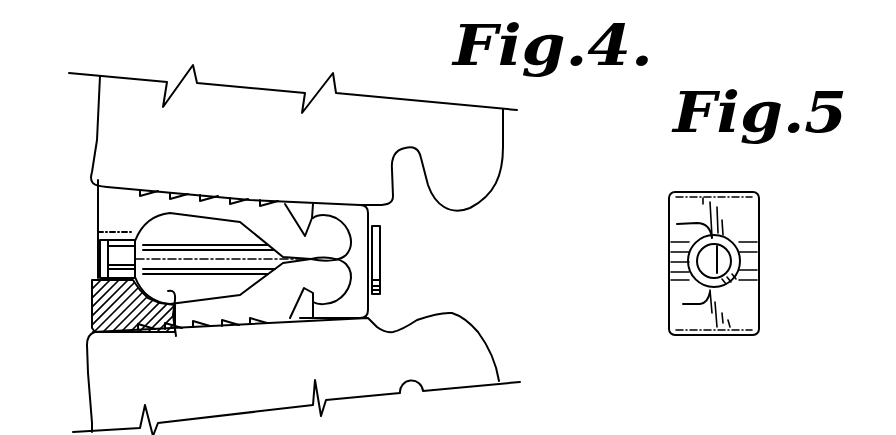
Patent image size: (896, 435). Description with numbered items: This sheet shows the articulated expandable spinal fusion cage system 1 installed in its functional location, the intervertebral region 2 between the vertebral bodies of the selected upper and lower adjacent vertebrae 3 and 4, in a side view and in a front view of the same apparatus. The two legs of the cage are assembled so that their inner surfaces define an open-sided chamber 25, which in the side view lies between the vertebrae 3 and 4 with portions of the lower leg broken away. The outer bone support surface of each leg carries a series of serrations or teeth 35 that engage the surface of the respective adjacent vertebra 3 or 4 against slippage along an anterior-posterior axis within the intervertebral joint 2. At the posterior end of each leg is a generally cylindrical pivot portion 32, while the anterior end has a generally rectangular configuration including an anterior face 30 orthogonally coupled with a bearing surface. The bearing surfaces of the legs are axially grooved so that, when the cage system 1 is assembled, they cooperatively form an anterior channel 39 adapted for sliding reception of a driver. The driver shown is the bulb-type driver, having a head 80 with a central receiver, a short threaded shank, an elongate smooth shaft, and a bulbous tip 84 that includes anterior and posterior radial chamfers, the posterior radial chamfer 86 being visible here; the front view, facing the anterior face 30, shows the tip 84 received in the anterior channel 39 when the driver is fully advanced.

In FIG. 4, the articulated expandable spinal fusion cage system 1 is at (50, 221).
In FIG. 4, the intervertebral region 2 is at (458, 251).
In FIG. 4, the upper adjacent vertebra 3 is at (110, 139).
In FIG. 4, the lower adjacent vertebra 4 is at (100, 381).
In FIG. 4, the open-sided chamber 25 is at (191, 236).
In FIG. 4, the pivot portion 32 is at (340, 243).
In FIG. 4, the serrations or teeth 35 is at (255, 200).
In FIG. 4, the head 80 is at (377, 266).
In FIG. 5, the anterior face 30 is at (743, 217).
In FIG. 5, the anterior channel 39 is at (677, 225).
In FIG. 5, the bulbous tip 84 is at (724, 251).
In FIG. 5, the posterior radial chamfer 86 is at (737, 281).